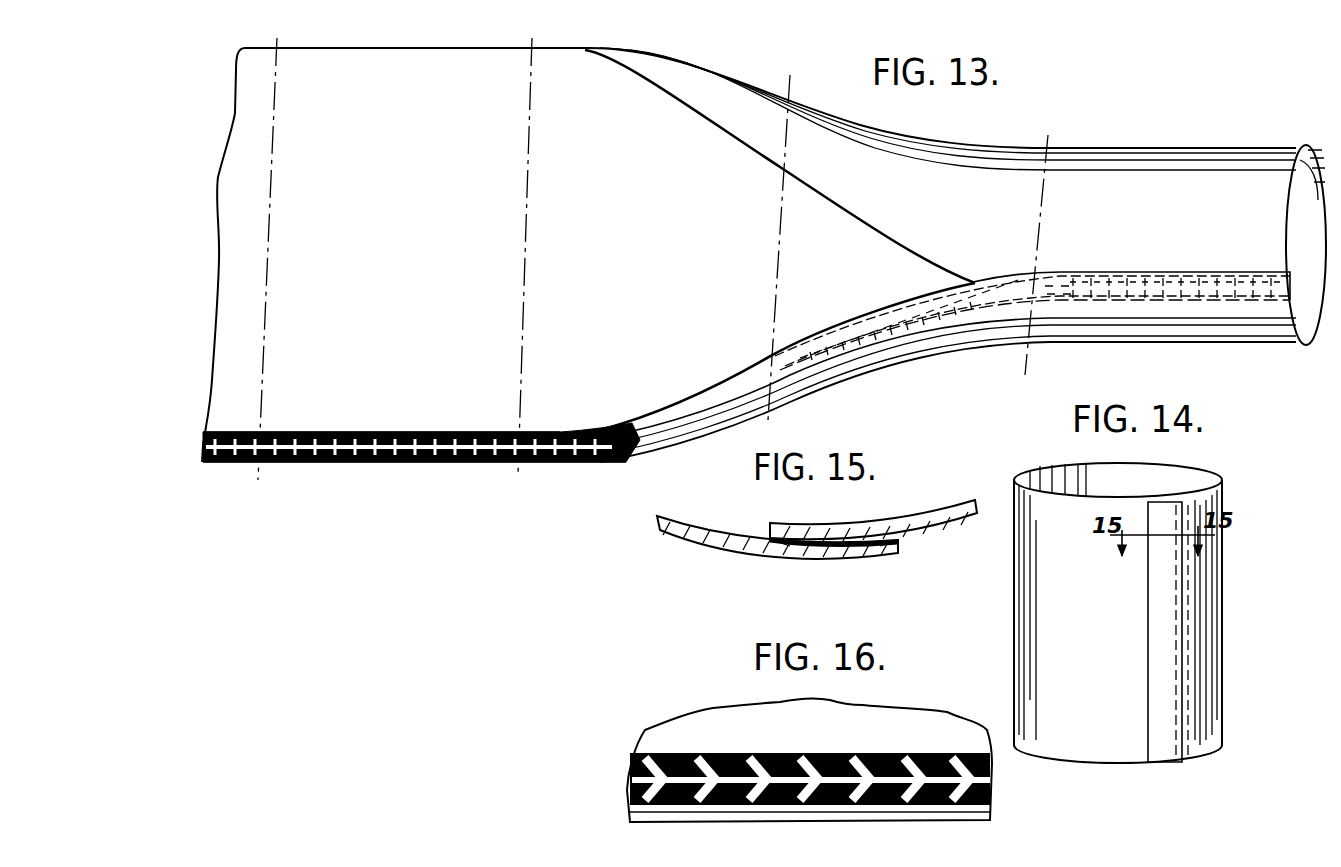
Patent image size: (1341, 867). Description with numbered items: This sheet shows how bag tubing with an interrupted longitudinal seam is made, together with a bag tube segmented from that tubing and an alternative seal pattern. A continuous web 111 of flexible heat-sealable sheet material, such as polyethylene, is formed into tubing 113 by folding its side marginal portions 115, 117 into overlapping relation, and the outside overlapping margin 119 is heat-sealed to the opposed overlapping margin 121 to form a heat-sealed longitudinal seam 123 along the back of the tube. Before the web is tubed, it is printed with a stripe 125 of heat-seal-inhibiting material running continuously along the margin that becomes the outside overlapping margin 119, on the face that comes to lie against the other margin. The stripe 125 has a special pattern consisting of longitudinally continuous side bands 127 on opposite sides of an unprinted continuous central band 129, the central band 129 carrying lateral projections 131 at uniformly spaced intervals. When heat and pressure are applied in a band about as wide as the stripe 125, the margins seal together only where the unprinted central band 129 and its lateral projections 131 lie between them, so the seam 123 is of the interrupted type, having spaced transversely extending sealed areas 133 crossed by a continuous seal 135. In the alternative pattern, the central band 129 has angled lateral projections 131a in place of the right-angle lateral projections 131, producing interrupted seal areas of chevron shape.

In FIG. 13, the continuous web 111 is at (212, 246).
In FIG. 13, the tubing 113 is at (1176, 142).
In FIG. 13, the side marginal portion 115 is at (1226, 322).
In FIG. 13, the side marginal portion 117 is at (1248, 177).
In FIG. 13, the outside overlapping margin 119 is at (1216, 272).
In FIG. 15, the outside overlapping margin 119 is at (905, 547).
In FIG. 13, the overlapping margin 121 is at (1283, 288).
In FIG. 15, the overlapping margin 121 is at (770, 525).
In FIG. 13, the heat-sealed longitudinal seam 123 is at (1148, 272).
In FIG. 13, the stripe 125 is at (204, 455).
In FIG. 16, the stripe 125 is at (624, 802).
In FIG. 13, the side bands 127 is at (320, 432).
In FIG. 15, the side bands 127 is at (793, 548).
In FIG. 16, the side bands 127 is at (724, 754).
In FIG. 13, the central band 129 is at (360, 463).
In FIG. 16, the central band 129 is at (636, 781).
In FIG. 13, the lateral projections 131 is at (447, 432).
In FIG. 16, the angled lateral projections 131a is at (809, 752).
In FIG. 13, the transversely extending sealed areas 133 is at (1085, 264).
In FIG. 14, the transversely extending sealed areas 133 is at (1158, 592).
In FIG. 13, the continuous seal 135 is at (1068, 277).
In FIG. 14, the continuous seal 135 is at (1163, 619).
In FIG. 15, the continuous seal 135 is at (822, 553).